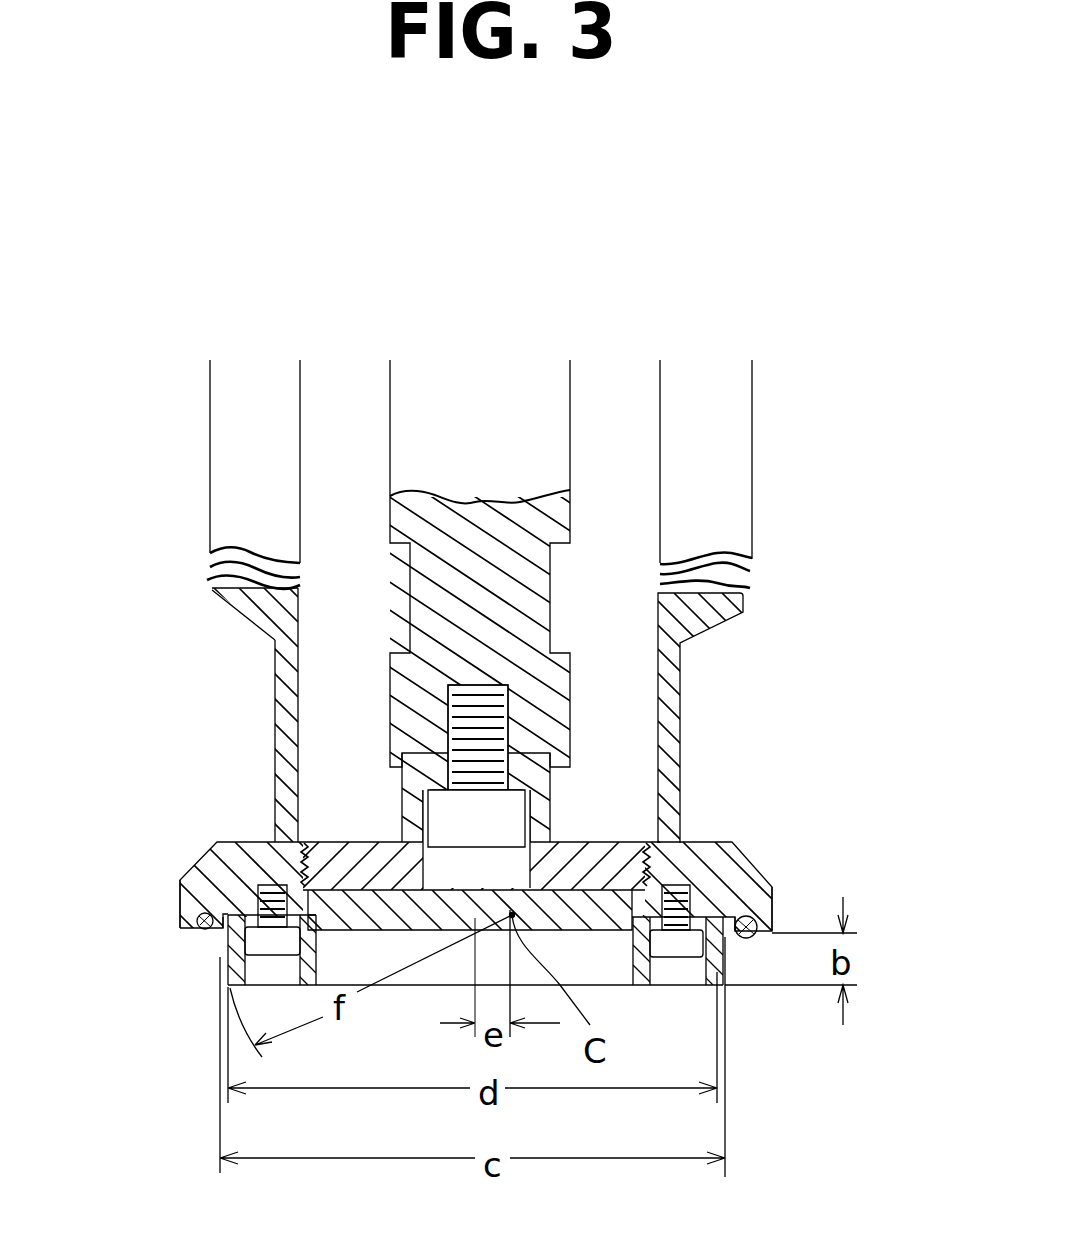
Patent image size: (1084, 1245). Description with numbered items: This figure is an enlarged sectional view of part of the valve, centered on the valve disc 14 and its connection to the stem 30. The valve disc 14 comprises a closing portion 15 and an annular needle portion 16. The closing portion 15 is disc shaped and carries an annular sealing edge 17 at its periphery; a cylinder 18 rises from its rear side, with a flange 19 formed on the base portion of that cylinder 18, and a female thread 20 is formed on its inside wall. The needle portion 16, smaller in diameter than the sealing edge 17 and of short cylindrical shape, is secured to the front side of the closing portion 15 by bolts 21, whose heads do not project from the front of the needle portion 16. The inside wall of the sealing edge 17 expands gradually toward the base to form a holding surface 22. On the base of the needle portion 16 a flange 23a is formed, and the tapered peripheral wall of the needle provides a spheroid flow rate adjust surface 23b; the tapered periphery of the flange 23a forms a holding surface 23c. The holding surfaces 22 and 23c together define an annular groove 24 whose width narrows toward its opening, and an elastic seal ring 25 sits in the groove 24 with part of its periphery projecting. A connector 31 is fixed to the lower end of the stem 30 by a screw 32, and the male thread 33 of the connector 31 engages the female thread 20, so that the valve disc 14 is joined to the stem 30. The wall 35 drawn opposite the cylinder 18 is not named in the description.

The valve disc 14 is at (808, 841).
The closing portion 15 is at (772, 907).
The annular needle portion 16 is at (720, 977).
The annular sealing edge 17 is at (760, 953).
The cylinder 18 is at (273, 730).
The flange 19 is at (212, 592).
The female thread 20 is at (605, 848).
The bolts 21 is at (282, 963).
The holding surface 22 is at (178, 897).
The flange 23a is at (765, 942).
The flow rate adjust surface 23b is at (732, 943).
The holding surface 23c is at (214, 932).
The annular groove 24 is at (210, 912).
The seal ring 25 is at (198, 932).
The stem 30 is at (573, 417).
The connector 31 is at (552, 790).
The screw 32 is at (497, 848).
The male thread 33 is at (660, 866).
The cylindrical wall 35 is at (750, 572).